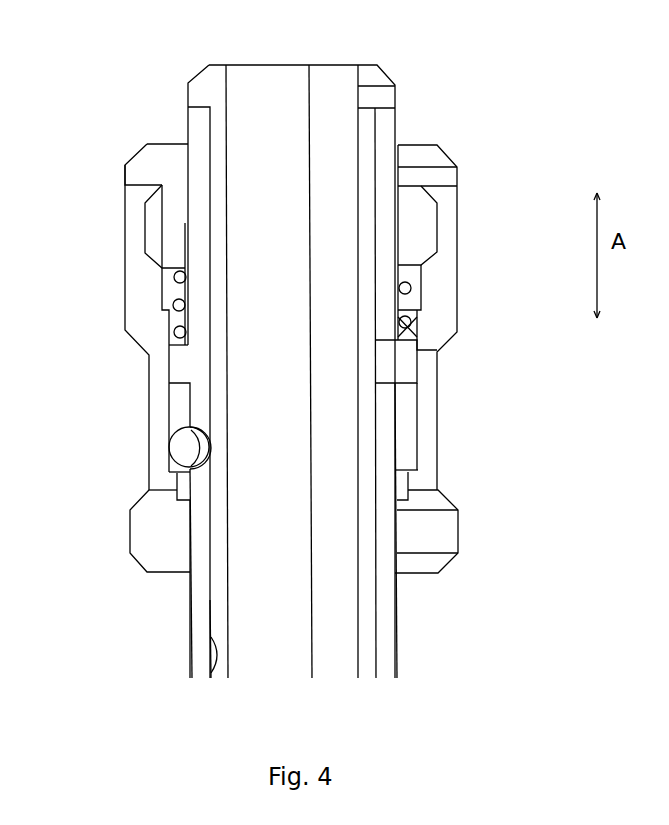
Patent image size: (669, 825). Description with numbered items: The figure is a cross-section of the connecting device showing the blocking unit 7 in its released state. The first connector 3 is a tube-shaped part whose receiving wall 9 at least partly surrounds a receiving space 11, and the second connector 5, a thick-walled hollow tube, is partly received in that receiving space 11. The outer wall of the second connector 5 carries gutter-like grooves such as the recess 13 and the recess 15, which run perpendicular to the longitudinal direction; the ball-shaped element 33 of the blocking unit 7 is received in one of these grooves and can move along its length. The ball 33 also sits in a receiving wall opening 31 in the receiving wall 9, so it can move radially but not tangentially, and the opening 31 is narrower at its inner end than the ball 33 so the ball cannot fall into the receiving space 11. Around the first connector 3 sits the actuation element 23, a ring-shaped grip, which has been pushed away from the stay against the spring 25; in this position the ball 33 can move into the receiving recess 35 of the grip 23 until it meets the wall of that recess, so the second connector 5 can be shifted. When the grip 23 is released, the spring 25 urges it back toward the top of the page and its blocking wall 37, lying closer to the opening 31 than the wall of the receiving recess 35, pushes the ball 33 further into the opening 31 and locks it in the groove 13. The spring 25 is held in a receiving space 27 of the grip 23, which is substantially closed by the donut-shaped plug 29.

The first connector 3 is at (393, 653).
The second connector 5 is at (248, 75).
The blocking unit 7 is at (60, 380).
The receiving wall 9 is at (197, 600).
The receiving space 11 is at (212, 648).
The recess 13 is at (215, 443).
The recess 15 is at (228, 647).
The actuation element 23 is at (133, 306).
The spring 25 is at (422, 277).
The receiving space 27 is at (173, 283).
The donut-shaped plug 29 is at (141, 163).
The receiving wall opening 31 is at (177, 478).
The ball-shaped element 33 is at (182, 447).
The receiving recess 35 is at (170, 406).
The blocking wall 37 is at (142, 503).